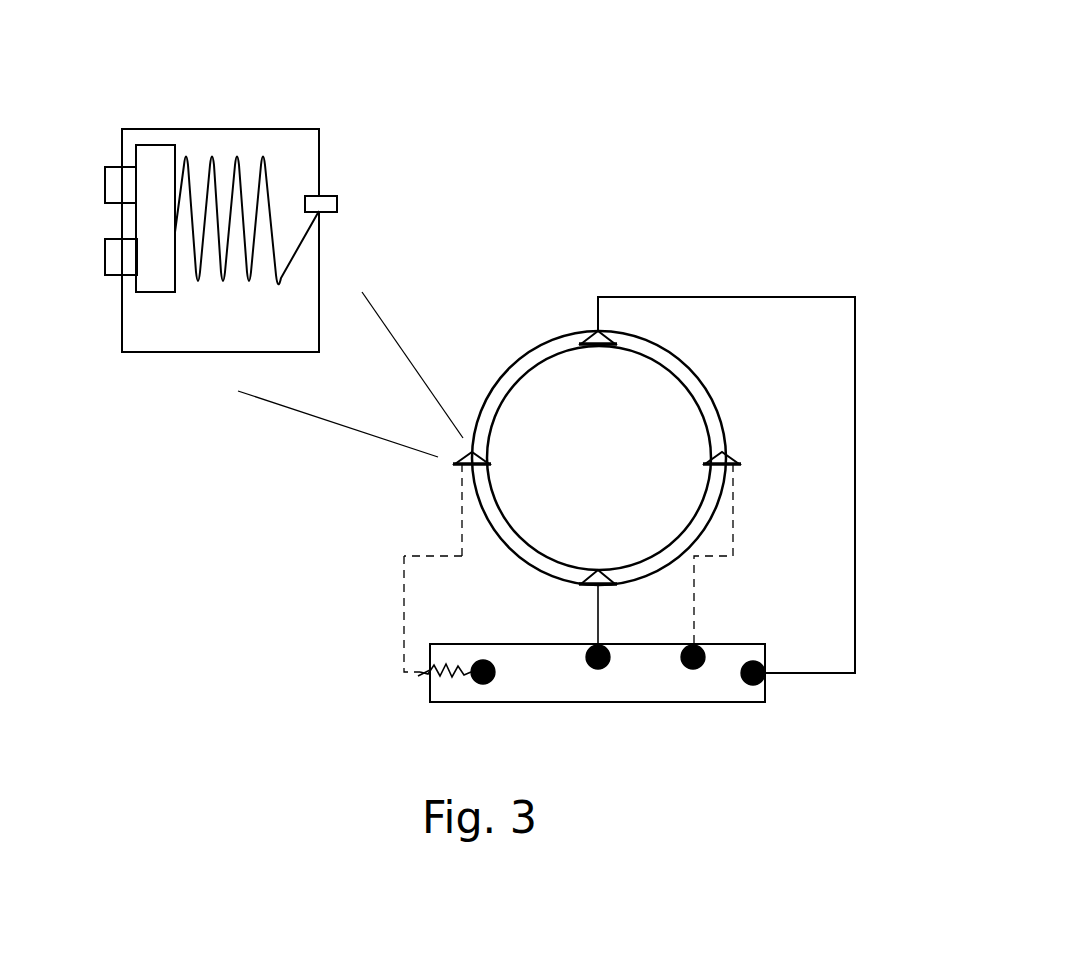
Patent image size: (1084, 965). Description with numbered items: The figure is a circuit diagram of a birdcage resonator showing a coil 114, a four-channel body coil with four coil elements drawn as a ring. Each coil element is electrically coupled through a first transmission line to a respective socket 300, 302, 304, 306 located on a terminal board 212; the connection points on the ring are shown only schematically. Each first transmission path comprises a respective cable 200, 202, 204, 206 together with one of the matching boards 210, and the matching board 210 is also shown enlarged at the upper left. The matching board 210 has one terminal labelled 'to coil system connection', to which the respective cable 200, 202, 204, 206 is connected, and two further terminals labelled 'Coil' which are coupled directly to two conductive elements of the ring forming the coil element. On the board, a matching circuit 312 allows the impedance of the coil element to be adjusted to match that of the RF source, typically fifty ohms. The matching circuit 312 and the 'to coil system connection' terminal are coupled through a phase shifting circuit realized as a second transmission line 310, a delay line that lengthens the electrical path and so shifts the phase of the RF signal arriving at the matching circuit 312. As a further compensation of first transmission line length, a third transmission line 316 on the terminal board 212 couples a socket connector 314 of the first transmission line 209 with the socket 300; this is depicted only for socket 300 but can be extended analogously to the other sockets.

The coil 114 is at (767, 240).
The cable 200 is at (403, 633).
The cable 202 is at (693, 590).
The cable 204 is at (598, 602).
The cable 206 is at (857, 535).
The first transmission line 209 is at (347, 558).
The matching board 210 is at (220, 95).
The terminal board 212 is at (755, 703).
The socket 300 is at (483, 685).
The socket 302 is at (693, 668).
The socket 304 is at (598, 668).
The socket 306 is at (765, 682).
The second transmission line 310 is at (263, 148).
The matching circuit 312 is at (157, 128).
The socket connector 314 is at (423, 675).
The third transmission line 316 is at (453, 663).